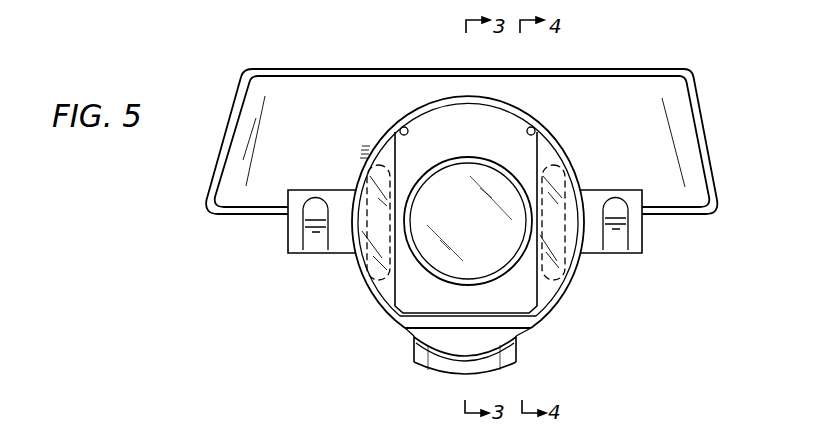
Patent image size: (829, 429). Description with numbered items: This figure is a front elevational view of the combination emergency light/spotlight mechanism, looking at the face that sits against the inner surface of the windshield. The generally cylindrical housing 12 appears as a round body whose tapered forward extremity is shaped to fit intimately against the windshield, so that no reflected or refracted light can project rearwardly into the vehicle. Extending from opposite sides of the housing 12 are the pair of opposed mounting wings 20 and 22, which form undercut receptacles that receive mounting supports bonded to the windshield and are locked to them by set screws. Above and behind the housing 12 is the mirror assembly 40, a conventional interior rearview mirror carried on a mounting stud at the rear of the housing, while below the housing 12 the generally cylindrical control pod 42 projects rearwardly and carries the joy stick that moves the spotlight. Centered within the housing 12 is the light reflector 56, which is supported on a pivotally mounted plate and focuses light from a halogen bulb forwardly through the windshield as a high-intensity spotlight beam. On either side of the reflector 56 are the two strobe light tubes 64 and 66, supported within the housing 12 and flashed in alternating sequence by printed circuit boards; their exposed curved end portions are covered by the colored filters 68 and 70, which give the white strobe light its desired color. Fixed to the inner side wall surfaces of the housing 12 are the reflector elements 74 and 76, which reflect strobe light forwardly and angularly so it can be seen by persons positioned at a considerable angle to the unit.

The housing 12 is at (360, 157).
The mounting wing 20 is at (642, 234).
The mounting wing 22 is at (288, 229).
The mirror assembly 40 is at (300, 86).
The control pod 42 is at (516, 346).
The light reflector 56 is at (467, 155).
The strobe light tube 64 is at (372, 263).
The strobe light tube 66 is at (557, 173).
The colored filter 68 is at (385, 291).
The colored filter 70 is at (552, 288).
The reflector element 74 is at (401, 129).
The reflector element 76 is at (534, 129).